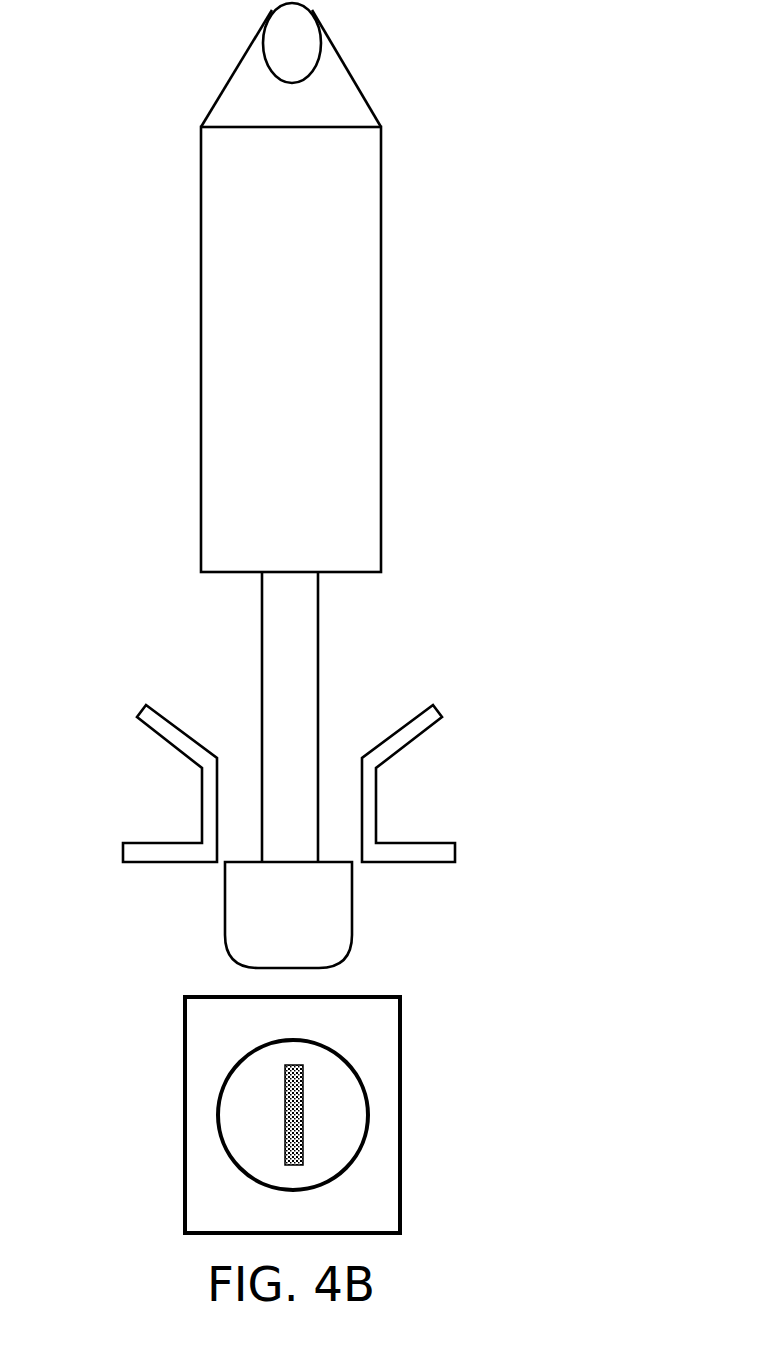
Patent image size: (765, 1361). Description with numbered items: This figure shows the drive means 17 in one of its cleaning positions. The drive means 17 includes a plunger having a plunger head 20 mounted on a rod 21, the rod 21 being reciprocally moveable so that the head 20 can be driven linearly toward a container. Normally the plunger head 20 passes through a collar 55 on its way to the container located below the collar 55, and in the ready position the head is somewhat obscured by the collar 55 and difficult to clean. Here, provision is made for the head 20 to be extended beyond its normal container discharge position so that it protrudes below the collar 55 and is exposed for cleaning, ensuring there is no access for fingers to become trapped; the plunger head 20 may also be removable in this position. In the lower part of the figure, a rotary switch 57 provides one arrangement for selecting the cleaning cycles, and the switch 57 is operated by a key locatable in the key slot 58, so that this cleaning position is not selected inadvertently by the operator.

The drive means 17 is at (185, 432).
The rod 21 is at (305, 633).
The collar 55 is at (203, 797).
The plunger head 20 is at (340, 921).
The rotary switch 57 is at (176, 1099).
The key slot 58 is at (303, 1122).